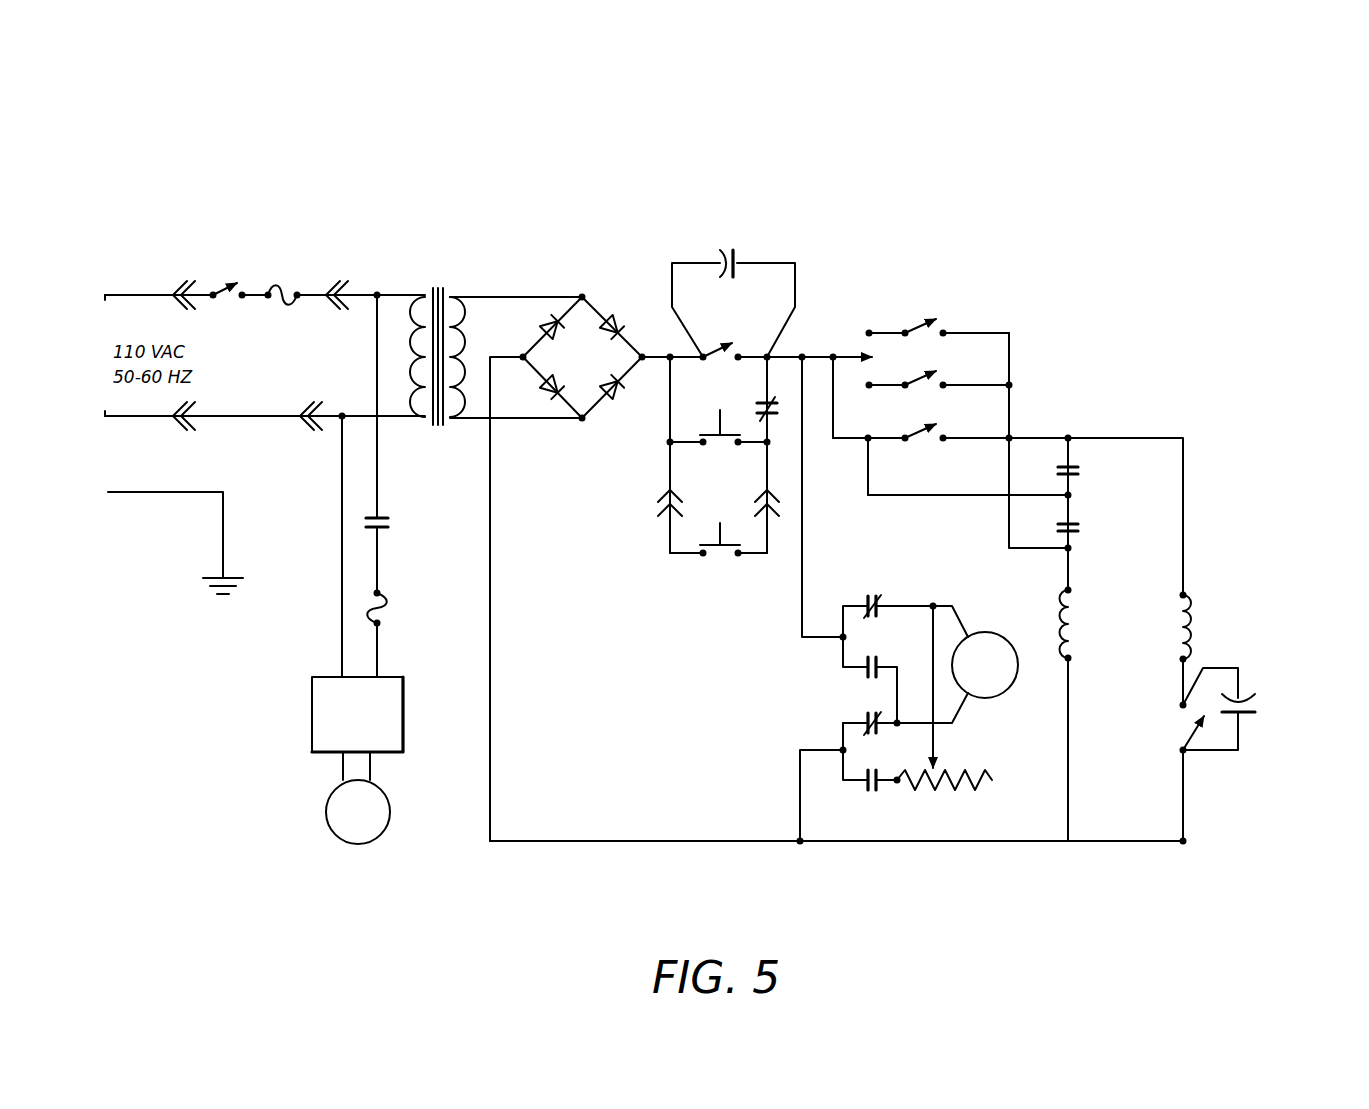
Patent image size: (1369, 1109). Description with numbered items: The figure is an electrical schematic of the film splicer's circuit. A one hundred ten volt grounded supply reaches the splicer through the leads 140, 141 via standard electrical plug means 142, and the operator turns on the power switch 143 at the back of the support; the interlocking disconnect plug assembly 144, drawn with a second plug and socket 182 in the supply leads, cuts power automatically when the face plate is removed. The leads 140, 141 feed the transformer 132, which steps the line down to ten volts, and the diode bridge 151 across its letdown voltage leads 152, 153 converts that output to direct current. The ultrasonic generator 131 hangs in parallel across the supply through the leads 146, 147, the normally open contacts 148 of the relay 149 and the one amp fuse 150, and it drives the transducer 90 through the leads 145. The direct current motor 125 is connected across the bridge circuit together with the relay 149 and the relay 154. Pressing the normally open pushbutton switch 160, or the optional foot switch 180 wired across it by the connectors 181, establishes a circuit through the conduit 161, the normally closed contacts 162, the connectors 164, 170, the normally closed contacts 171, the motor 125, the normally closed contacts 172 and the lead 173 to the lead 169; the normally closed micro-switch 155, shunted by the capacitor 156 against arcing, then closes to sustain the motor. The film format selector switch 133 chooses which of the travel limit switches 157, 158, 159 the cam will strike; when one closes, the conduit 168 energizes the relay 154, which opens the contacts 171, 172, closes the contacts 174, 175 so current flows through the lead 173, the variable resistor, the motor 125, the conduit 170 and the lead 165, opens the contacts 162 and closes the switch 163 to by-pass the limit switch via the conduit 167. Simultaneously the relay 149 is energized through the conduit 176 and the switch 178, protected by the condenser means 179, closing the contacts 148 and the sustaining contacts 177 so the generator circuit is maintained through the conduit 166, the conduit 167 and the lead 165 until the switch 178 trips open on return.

The transducer 90 is at (340, 840).
The electrical motor 125 is at (1004, 638).
The ultrasonic generator 131 is at (312, 737).
The transformer 132 is at (425, 283).
The film format selector switch 133 is at (872, 345).
The lead 140 is at (138, 293).
The lead 141 is at (140, 416).
The electrical plug means 142 is at (170, 407).
The power switch 143 is at (228, 300).
The interlocking disconnect plug assembly 144 is at (273, 285).
The leads 145 is at (370, 766).
The lead 146 is at (378, 478).
The lead 147 is at (342, 548).
The normally open contacts 148 is at (393, 537).
The relay 149 is at (1190, 612).
The one amp fuse 150 is at (383, 627).
The diode bridge 151 is at (607, 303).
The letdown voltage lead 152 is at (503, 295).
The letdown voltage lead 153 is at (522, 420).
The relay 154 is at (1072, 607).
The micro-switch 155 is at (706, 365).
The capacitor 156 is at (737, 248).
The travel limit switch 157 is at (927, 312).
The travel limit switch 158 is at (920, 370).
The travel limit switch 159 is at (918, 425).
The pushbutton switch 160 is at (707, 430).
The conduit 161 is at (668, 356).
The normally closed contacts 162 is at (775, 420).
The switch 163 is at (1052, 528).
The connector 164 is at (803, 350).
The lead 165 is at (814, 362).
The conduit 166 is at (845, 443).
The conduit 167 is at (950, 495).
The conduit 168 is at (1068, 565).
The lead 169 is at (630, 841).
The connector 170 is at (802, 617).
The normally closed contacts 171 is at (872, 594).
The normally closed contacts 172 is at (860, 718).
The lead 173 is at (800, 778).
The contacts 174 is at (870, 655).
The contacts 175 is at (865, 785).
The conduit 176 is at (1053, 438).
The contacts 177 is at (1093, 462).
The switch 178 is at (1163, 722).
The condenser means 179 is at (1265, 714).
The foot switch 180 is at (703, 538).
The connectors 181 is at (652, 512).
The plug and socket E1 182 is at (313, 417).